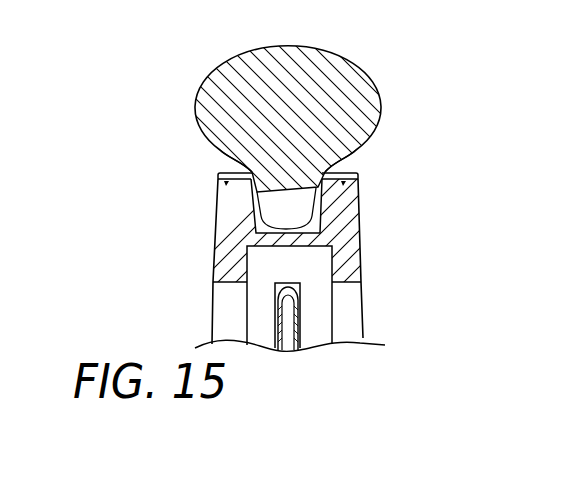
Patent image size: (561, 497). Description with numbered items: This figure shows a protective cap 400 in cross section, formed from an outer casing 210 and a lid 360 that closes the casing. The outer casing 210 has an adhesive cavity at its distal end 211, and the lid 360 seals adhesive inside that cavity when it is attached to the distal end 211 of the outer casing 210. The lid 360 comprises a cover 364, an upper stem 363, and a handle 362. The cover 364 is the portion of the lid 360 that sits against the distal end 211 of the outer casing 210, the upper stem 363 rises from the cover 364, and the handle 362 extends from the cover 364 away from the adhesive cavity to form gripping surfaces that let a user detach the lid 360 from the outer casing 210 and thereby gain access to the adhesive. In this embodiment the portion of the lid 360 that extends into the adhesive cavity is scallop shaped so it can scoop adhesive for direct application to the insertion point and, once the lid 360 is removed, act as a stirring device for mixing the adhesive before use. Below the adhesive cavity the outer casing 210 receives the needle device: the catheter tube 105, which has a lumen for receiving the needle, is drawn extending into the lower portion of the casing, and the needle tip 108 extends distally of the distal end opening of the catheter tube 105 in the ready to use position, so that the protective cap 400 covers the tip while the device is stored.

The lid 360 is at (320, 125).
The handle 362 is at (222, 62).
The upper stem 363 is at (326, 167).
The cover 364 is at (243, 167).
The distal end 211 is at (218, 175).
The protective cap 400 is at (324, 260).
The outer casing 210 is at (361, 243).
The needle tip 108 is at (300, 292).
The catheter tube 105 is at (302, 342).